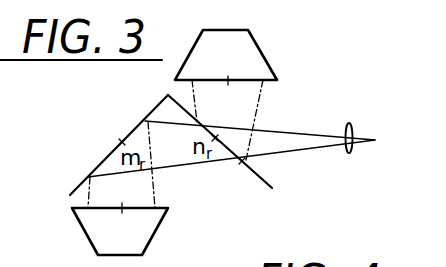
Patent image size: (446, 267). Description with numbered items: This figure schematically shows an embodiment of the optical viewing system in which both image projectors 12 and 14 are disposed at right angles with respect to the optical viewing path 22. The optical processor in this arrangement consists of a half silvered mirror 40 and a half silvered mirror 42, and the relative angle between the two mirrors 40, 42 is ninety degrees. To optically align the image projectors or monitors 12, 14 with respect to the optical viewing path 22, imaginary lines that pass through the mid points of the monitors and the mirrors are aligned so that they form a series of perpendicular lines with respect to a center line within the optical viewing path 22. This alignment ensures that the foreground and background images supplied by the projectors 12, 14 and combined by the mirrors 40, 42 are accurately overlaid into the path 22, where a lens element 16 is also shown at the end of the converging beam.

The image projector 12 is at (158, 228).
The image projector 14 is at (268, 55).
The lens 16 is at (354, 125).
The optical viewing path 22 is at (296, 129).
The half silvered mirror 40 is at (122, 143).
The half silvered mirror 42 is at (259, 182).